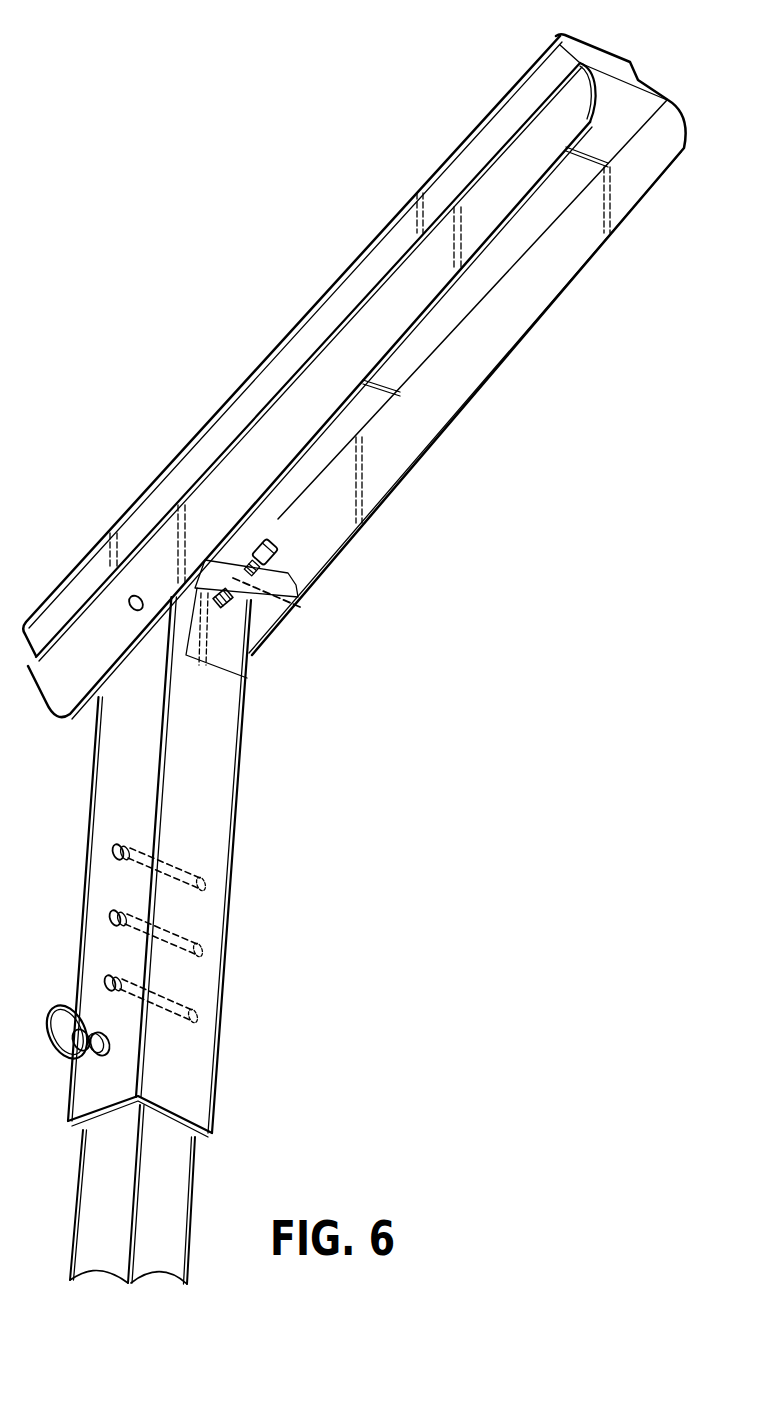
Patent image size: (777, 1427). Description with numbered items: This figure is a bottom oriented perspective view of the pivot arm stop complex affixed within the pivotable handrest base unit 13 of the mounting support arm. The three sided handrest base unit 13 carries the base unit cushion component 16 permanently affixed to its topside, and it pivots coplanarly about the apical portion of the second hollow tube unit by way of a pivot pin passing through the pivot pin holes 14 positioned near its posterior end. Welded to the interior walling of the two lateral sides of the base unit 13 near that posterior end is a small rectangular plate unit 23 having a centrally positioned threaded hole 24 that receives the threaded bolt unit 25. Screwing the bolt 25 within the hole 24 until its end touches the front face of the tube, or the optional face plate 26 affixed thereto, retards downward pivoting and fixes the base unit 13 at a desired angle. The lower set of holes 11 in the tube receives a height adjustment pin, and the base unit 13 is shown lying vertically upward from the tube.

The lower set of holes 11 is at (113, 848).
The pivotable handrest base unit 13 is at (550, 302).
The pivot pin holes 14 is at (131, 607).
The base unit cushion component 16 is at (293, 338).
The plate unit 23 is at (260, 605).
The threaded hole 24 is at (300, 607).
The threaded bolt unit 25 is at (277, 545).
The face plate 26 is at (227, 652).